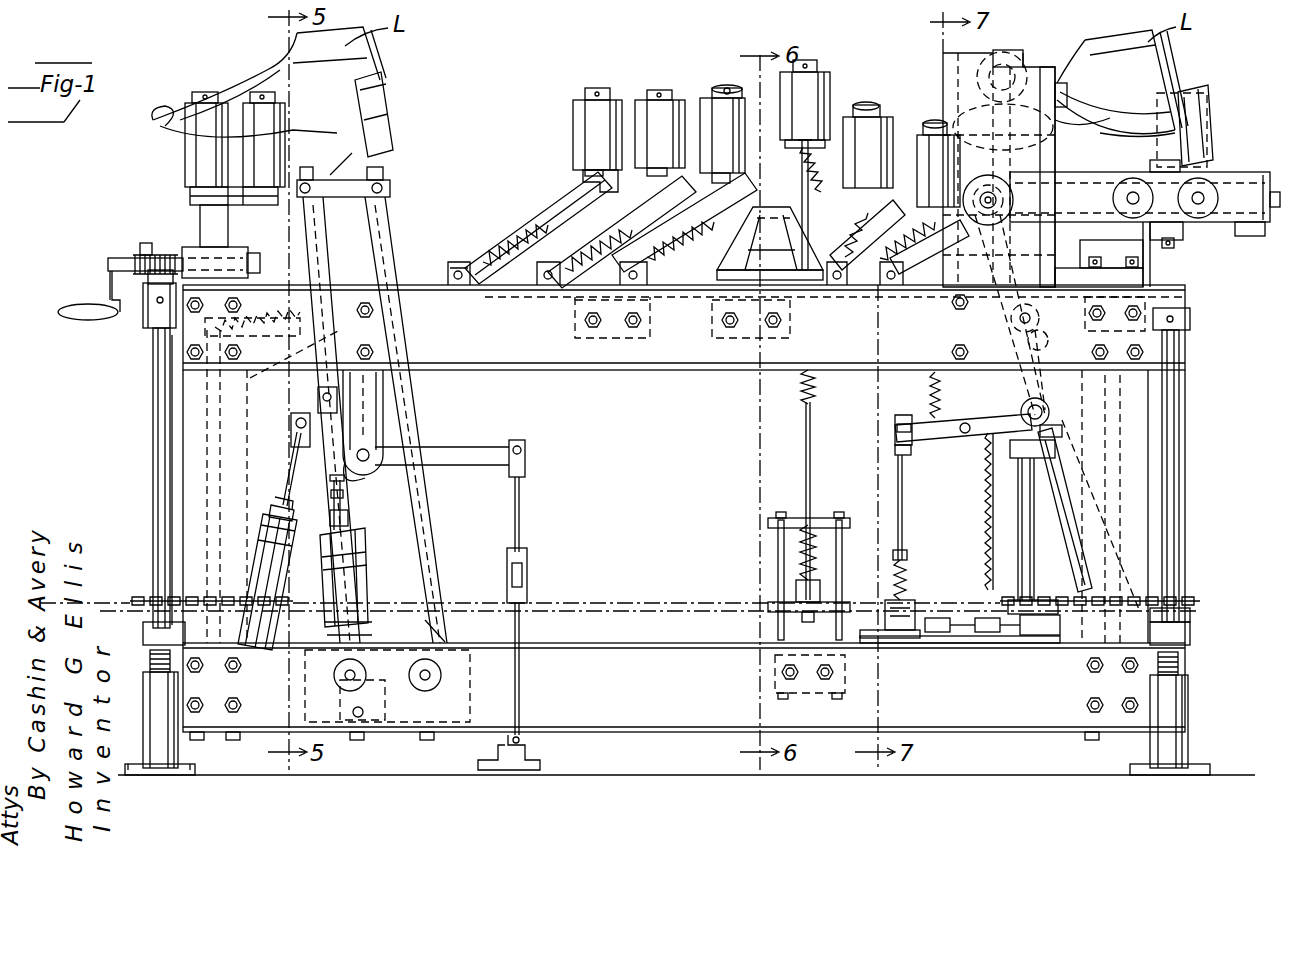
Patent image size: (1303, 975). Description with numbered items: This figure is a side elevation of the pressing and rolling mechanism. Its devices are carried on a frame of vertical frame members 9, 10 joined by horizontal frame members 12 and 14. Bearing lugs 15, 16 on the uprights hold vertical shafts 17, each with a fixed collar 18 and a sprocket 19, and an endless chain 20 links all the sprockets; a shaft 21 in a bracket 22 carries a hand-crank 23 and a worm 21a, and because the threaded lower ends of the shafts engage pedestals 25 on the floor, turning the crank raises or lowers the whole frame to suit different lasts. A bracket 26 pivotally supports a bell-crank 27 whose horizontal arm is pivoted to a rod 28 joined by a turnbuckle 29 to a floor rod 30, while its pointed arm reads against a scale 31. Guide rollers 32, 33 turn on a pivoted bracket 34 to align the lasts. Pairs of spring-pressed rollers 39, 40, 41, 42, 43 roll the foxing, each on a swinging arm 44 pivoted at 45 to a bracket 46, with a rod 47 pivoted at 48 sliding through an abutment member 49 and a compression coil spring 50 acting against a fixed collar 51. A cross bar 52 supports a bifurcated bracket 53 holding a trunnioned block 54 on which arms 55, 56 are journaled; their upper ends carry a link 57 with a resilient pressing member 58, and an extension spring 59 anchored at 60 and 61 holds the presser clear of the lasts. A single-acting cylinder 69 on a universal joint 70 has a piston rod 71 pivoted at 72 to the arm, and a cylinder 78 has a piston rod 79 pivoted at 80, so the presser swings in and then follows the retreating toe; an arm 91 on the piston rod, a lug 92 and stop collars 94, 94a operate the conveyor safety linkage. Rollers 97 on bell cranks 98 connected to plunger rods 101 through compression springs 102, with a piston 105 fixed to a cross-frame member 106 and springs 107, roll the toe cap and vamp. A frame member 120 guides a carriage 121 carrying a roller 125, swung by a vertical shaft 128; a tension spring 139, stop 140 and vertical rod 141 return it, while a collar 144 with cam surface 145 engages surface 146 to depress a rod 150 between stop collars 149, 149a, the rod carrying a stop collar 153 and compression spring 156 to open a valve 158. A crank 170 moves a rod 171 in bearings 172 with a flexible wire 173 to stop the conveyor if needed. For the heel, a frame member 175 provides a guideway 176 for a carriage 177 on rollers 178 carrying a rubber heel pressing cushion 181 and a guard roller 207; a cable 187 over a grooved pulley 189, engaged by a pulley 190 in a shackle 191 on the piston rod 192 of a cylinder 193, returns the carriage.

The vertical frame member 9 is at (190, 455).
The vertical frame member 10 is at (1135, 485).
The horizontal frame member 12 is at (656, 363).
The horizontal frame member 14 is at (635, 672).
The bearing lug 15 is at (143, 300).
The bearing lug 16 is at (145, 632).
The vertical shaft 17 is at (155, 410).
The fixed collar 18 is at (150, 334).
The sprocket 19 is at (1175, 605).
The endless chain 20 is at (143, 600).
The shaft 21 is at (110, 262).
The worm 21a is at (160, 256).
The bracket 22 is at (238, 256).
The hand-crank 23 is at (85, 306).
The pedestal 25 is at (160, 745).
The bracket 26 is at (385, 418).
The bell-crank 27 is at (440, 455).
The rod 28 is at (520, 533).
The turnbuckle 29 is at (528, 575).
The rod 30 is at (522, 635).
The scale 31 is at (357, 272).
The roller 32 is at (200, 128).
The roller 33 is at (272, 122).
The bracket 34 is at (192, 196).
The spring-pressed rollers 39 is at (580, 112).
The spring-pressed rollers 40 is at (645, 108).
The spring-pressed rollers 41 is at (708, 110).
The spring-pressed rollers 42 is at (860, 112).
The spring-pressed rollers 43 is at (935, 125).
The swinging arm 44 is at (575, 200).
The pivot 45 is at (505, 240).
The bracket 46 is at (1190, 635).
The rod 47 is at (570, 230).
The pivot 48 is at (592, 185).
The abutment member 49 is at (455, 285).
The compression coil spring 50 is at (490, 256).
The fixed collar 51 is at (552, 262).
The cross bar 52 is at (362, 735).
The bifurcated bracket 53 is at (480, 742).
The trunnioned block 54 is at (455, 690).
The arm 55 is at (328, 630).
The arm 56 is at (432, 632).
The link 57 is at (356, 196).
The resilient pressing member 58 is at (380, 106).
The extension spring 59 is at (258, 308).
The anchor point 60 is at (245, 333).
The anchor point 61 is at (292, 372).
The single-acting cylinder 69 is at (362, 592).
The universal joint 70 is at (325, 712).
The piston rod 71 is at (365, 478).
The pivot 72 is at (318, 395).
The cylinder 78 is at (270, 590).
The piston rod 79 is at (293, 442).
The pivot 80 is at (291, 412).
The arm 91 is at (360, 530).
The lug 92 is at (355, 560).
The stop collar 94 is at (352, 520).
The stop collar 94a is at (360, 540).
The rollers 97 is at (815, 82).
The bell crank 98 is at (795, 160).
The plunger rod 101 is at (800, 432).
The compression spring 102 is at (800, 385).
The piston 105 is at (790, 620).
The cross-frame member 106 is at (775, 668).
The spring 107 is at (800, 175).
The frame member 120 is at (945, 270).
The carriage 121 is at (1055, 122).
The roller 125 is at (1010, 52).
The vertical shaft 128 is at (1025, 560).
The tension spring 139 is at (986, 478).
The stop 140 is at (990, 568).
The vertical rod 141 is at (1000, 598).
The collar 144 is at (1050, 450).
The cam surface 145 is at (1010, 450).
The corresponding surface 146 is at (970, 436).
The stop collar 149 is at (896, 430).
The stop collar 149a is at (895, 437).
The rod 150 is at (895, 452).
The stop collar 153 is at (905, 545).
The compression spring 156 is at (905, 575).
The valve 158 is at (885, 640).
The crank 170 is at (1048, 640).
The rod 171 is at (1015, 640).
The bearings 172 is at (940, 640).
The flexible wire 173 is at (880, 660).
The frame member 175 is at (1200, 232).
The guideway 176 is at (1232, 226).
The carriage 177 is at (1205, 172).
The rollers 178 is at (1200, 190).
The rubber heel pressing cushion 181 is at (1195, 100).
The cable 187 is at (1010, 318).
The grooved pulley 189 is at (1145, 197).
The grooved pulley 190 is at (1028, 342).
The shackle 191 is at (1040, 370).
The piston rod 192 is at (1024, 410).
The cylinder 193 is at (1075, 515).
The guard roller 207 is at (1150, 137).